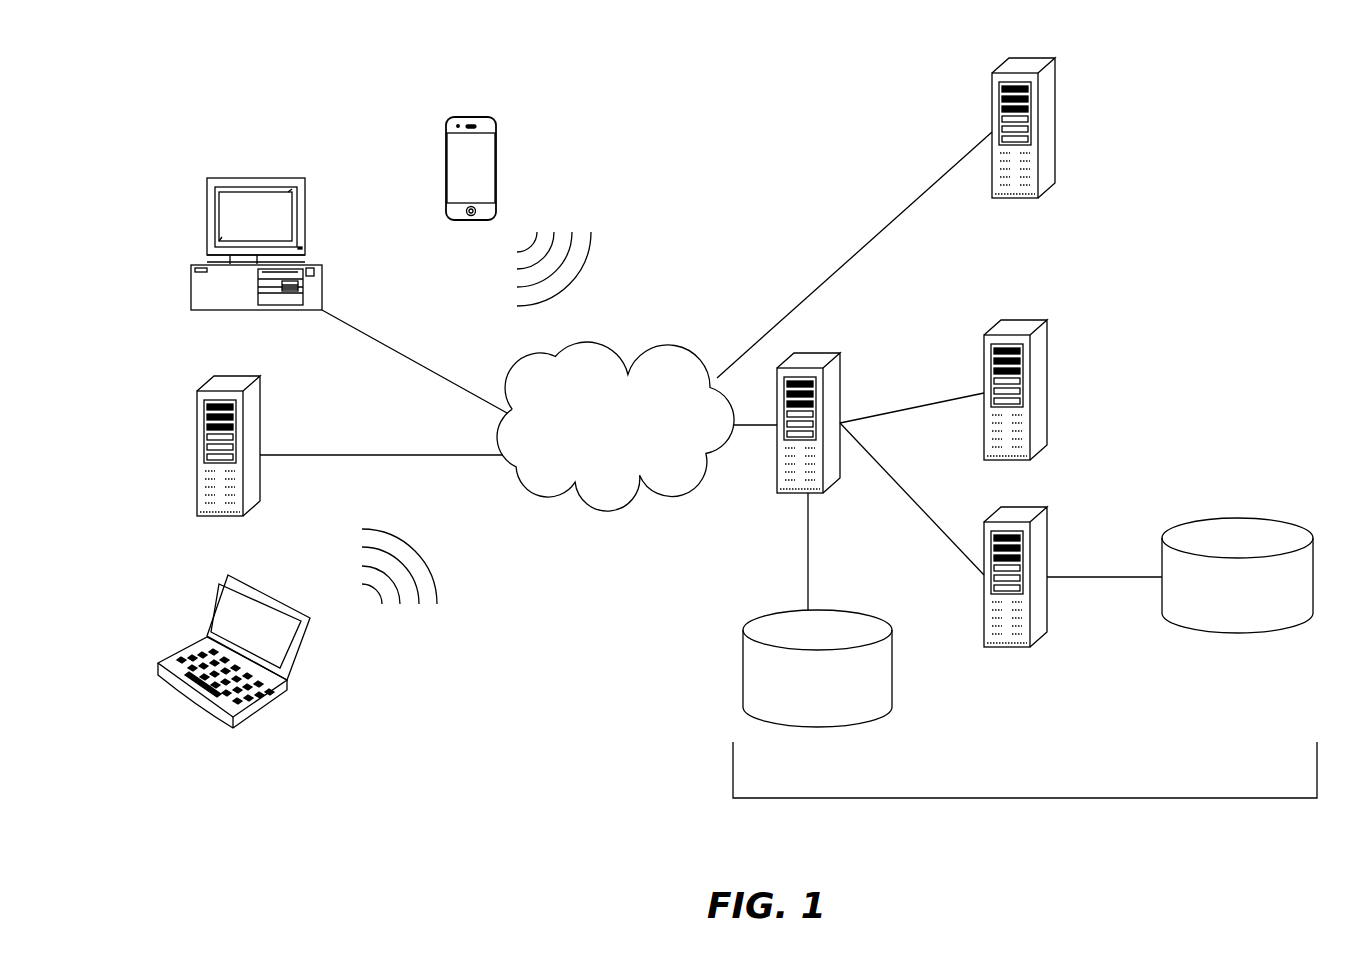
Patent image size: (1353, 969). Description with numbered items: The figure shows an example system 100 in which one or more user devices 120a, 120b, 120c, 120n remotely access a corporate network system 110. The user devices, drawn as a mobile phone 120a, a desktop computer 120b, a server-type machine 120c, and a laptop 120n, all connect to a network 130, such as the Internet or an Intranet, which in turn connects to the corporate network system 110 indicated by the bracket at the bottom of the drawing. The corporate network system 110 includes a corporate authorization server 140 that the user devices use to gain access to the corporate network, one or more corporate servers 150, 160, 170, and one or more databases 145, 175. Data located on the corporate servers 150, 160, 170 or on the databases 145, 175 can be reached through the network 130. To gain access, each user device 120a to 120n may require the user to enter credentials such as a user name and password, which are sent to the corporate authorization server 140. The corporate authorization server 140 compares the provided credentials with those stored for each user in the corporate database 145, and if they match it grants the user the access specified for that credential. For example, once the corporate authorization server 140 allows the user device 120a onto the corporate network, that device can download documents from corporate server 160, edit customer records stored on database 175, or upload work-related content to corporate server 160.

The system 100 is at (237, 118).
The corporate network system 110 is at (1025, 798).
The user device 120a is at (484, 117).
The user device 120b is at (298, 178).
The user device 120c is at (248, 375).
The user device 120n is at (307, 650).
The network 130 is at (668, 344).
The corporate authorization server 140 is at (820, 353).
The corporate database 145 is at (866, 614).
The corporate server 150 is at (1054, 58).
The corporate server 160 is at (1047, 319).
The corporate server 170 is at (1047, 505).
The database 175 is at (1234, 518).